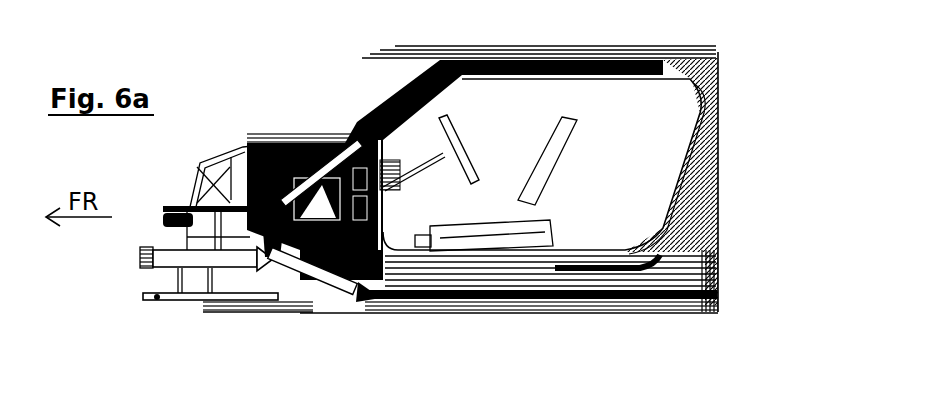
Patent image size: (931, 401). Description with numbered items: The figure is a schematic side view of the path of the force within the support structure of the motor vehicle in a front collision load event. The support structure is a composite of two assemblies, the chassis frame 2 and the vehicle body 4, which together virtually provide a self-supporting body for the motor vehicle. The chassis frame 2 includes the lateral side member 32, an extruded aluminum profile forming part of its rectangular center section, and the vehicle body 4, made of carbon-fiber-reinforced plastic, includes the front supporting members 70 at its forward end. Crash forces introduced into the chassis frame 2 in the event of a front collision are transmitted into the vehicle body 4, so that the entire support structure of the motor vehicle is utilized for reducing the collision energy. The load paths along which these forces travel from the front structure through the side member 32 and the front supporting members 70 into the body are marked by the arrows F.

The chassis frame 2 is at (465, 204).
The vehicle body 4 is at (697, 78).
The left lateral side member 32 is at (534, 307).
The front supporting member 70 is at (283, 180).
The arrows F is at (183, 208).